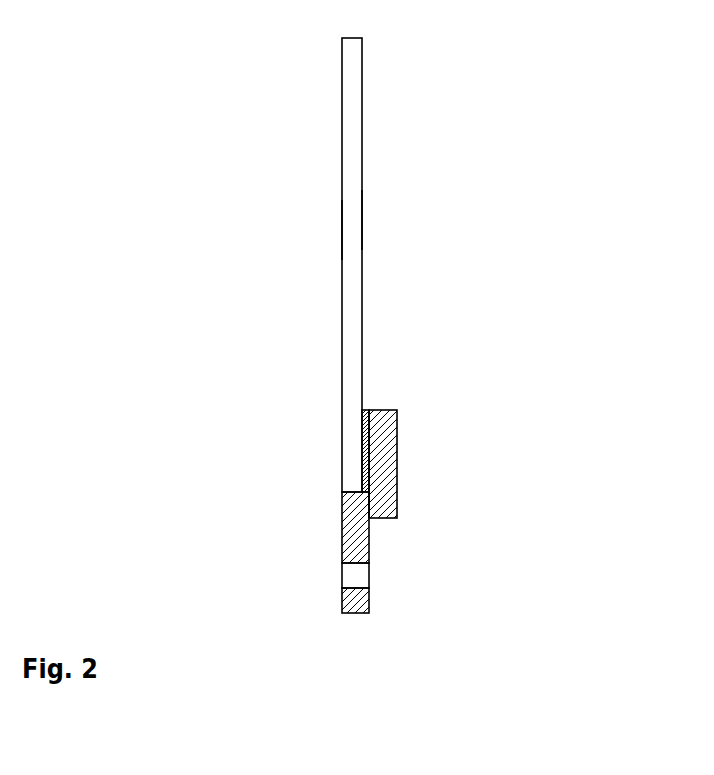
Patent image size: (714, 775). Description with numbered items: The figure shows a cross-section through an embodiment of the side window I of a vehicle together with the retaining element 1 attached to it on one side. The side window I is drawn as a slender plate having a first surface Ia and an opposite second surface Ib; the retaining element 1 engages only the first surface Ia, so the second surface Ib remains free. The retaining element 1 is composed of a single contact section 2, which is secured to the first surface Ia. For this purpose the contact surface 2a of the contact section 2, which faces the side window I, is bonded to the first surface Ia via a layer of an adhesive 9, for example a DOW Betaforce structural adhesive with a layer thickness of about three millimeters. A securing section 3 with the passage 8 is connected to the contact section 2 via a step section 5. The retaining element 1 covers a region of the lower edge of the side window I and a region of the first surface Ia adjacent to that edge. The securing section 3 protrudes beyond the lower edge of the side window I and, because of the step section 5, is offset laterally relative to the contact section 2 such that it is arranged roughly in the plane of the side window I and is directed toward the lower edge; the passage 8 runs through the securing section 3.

The side window I is at (352, 197).
The first surface of the side window Ia is at (363, 220).
The second surface of the side window Ib is at (342, 230).
The retaining element 1 is at (373, 455).
The contact section 2 is at (385, 450).
The contact surface 2a is at (367, 470).
The securing section 3 is at (350, 553).
The step section 5 is at (366, 506).
The passage 8 is at (358, 573).
The adhesive 9 is at (364, 410).